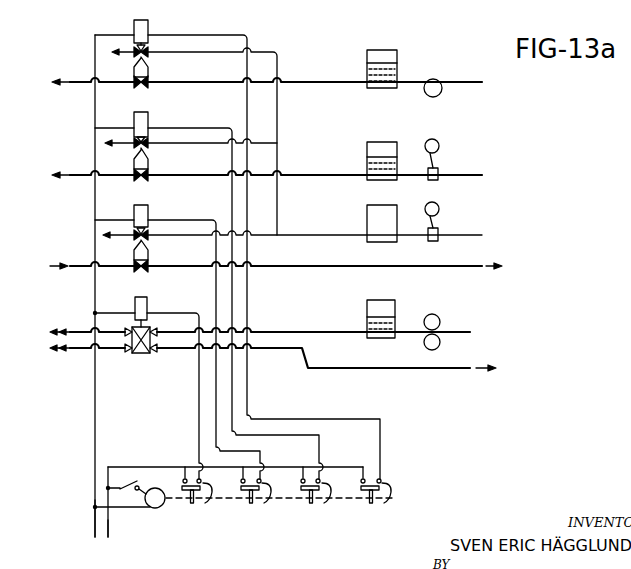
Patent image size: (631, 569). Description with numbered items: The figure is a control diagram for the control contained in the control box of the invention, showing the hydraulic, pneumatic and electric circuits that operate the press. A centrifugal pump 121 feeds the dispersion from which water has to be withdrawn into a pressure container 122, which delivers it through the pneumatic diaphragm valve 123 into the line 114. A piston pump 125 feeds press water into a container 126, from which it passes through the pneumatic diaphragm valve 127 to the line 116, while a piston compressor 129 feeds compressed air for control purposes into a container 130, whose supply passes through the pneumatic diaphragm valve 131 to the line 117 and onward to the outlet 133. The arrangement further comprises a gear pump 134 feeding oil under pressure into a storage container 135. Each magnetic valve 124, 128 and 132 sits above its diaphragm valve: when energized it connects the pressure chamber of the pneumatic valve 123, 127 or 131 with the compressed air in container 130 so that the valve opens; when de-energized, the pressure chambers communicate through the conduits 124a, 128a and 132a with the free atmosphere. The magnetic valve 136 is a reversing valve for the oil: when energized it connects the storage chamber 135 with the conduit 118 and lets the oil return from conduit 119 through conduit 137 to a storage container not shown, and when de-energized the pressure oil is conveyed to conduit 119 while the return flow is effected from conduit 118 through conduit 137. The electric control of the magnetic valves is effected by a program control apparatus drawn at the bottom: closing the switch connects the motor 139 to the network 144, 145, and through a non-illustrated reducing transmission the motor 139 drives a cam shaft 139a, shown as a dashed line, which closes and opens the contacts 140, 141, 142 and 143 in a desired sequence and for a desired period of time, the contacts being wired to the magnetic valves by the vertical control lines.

The inlet conduit 114 is at (92, 85).
The inlet conduit 116 is at (90, 178).
The inlet conduit 117 is at (90, 270).
The conduit 118 is at (90, 331).
The conduit 119 is at (90, 350).
The centrifugal pump 121 is at (443, 79).
The pressure container 122 is at (383, 58).
The pneumatic diaphragm valve 123 is at (150, 70).
The magnetic valve 124 is at (148, 32).
The conduit 124a is at (120, 50).
The piston pump 125 is at (441, 170).
The container 126 is at (372, 150).
The pneumatic diaphragm valve 127 is at (150, 164).
The magnetic valve 128 is at (148, 125).
The conduit 128a is at (118, 142).
The piston compressor 129 is at (442, 228).
The container 130 is at (374, 218).
The pneumatic diaphragm valve 131 is at (150, 257).
The magnetic valve 132 is at (148, 216).
The conduit 132a is at (120, 234).
The outlet conduit 133 is at (438, 264).
The gear pump 134 is at (439, 319).
The storage container 135 is at (372, 308).
The magnetic valve 136 is at (147, 305).
The conduit 137 is at (437, 368).
The motor 139 is at (131, 484).
The cam shaft 139a is at (226, 495).
The contact 140 is at (195, 499).
The contact 141 is at (263, 500).
The contact 142 is at (323, 500).
The contact 143 is at (389, 500).
The network 144 is at (93, 516).
The network 145 is at (107, 524).